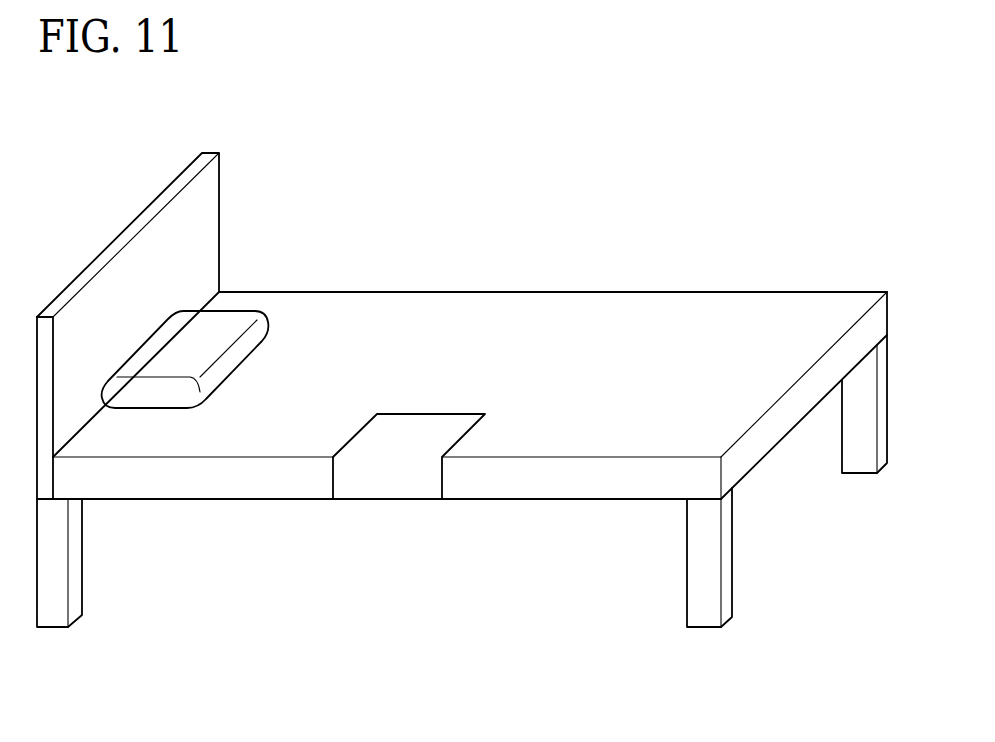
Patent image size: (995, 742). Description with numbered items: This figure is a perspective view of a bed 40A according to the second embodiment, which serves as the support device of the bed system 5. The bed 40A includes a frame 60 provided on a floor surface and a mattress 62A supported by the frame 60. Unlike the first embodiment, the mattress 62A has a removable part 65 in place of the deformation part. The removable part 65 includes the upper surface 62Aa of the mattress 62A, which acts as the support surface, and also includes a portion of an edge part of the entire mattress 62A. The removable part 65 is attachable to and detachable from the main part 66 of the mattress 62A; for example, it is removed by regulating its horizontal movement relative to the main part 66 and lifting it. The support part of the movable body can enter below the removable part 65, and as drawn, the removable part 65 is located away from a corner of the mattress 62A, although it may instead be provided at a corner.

The bed 40A is at (690, 204).
The bed system 5 is at (462, 361).
The frame 60 is at (75, 560).
The mattress 62A is at (400, 293).
The upper surface 62Aa is at (495, 320).
The removable part 65 is at (402, 437).
The main part 66 is at (272, 437).